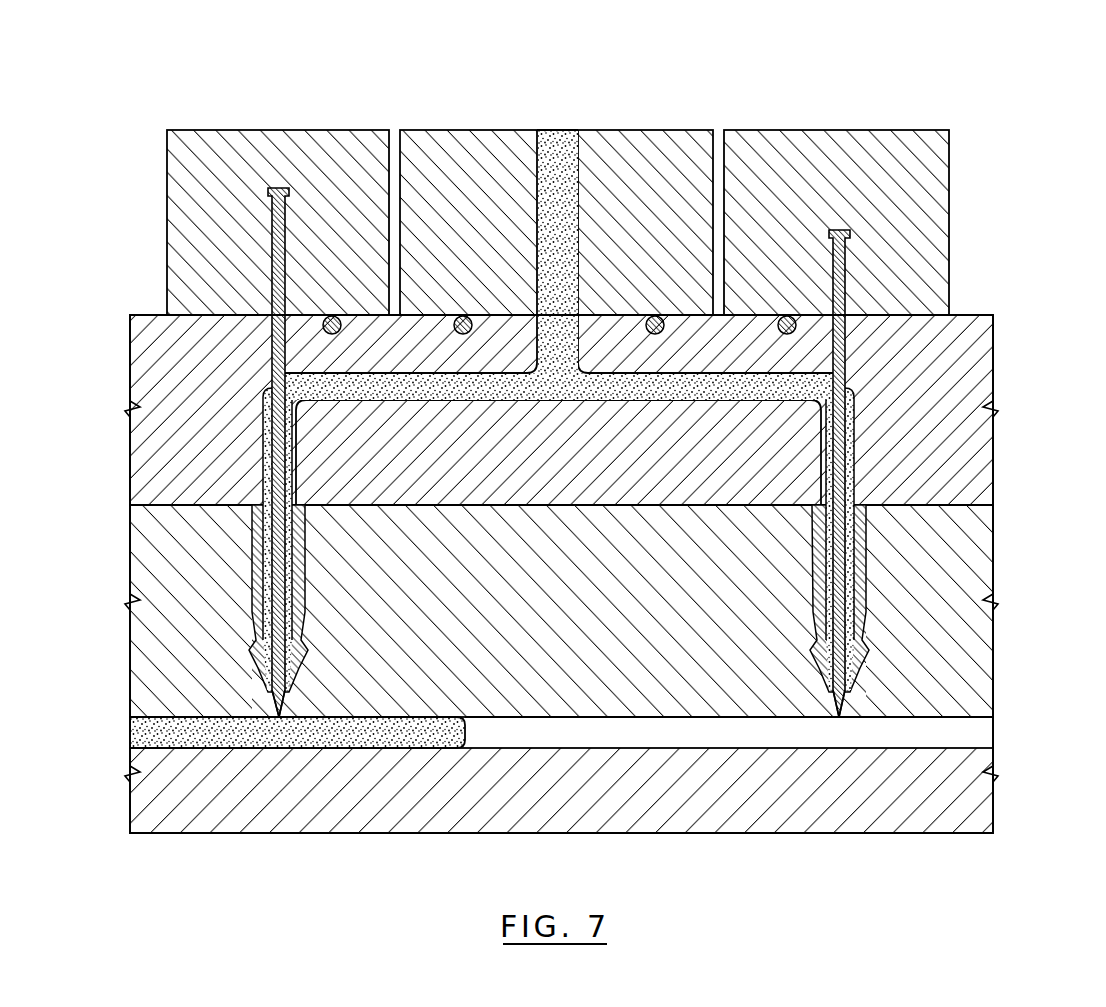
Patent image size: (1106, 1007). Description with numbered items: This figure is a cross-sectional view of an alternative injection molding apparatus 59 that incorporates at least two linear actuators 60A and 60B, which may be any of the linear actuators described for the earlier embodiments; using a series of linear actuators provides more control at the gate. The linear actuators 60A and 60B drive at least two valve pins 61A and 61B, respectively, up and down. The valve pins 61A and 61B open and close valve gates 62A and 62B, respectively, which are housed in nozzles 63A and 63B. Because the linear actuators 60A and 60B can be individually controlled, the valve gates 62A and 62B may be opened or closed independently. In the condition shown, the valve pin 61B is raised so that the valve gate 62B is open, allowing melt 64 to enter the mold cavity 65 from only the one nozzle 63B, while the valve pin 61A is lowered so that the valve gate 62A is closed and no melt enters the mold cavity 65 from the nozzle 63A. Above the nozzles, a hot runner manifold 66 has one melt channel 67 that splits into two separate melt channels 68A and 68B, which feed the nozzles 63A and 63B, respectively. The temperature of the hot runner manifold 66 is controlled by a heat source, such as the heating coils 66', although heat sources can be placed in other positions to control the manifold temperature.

The injection molding apparatus 59 is at (974, 117).
The linear actuator 60A is at (930, 213).
The linear actuator 60B is at (183, 213).
The valve pin 61A is at (845, 345).
The valve pin 61B is at (276, 344).
The valve gate 62A is at (845, 717).
The valve gate 62B is at (278, 716).
The nozzle 63A is at (897, 609).
The nozzle 63B is at (226, 612).
The melt 64 is at (365, 737).
The mold cavity 65 is at (608, 738).
The hot runner manifold 66 is at (590, 548).
The heating coils 66' is at (564, 288).
The melt channel 67 is at (562, 168).
The melt channel 68A is at (690, 380).
The melt channel 68B is at (400, 380).